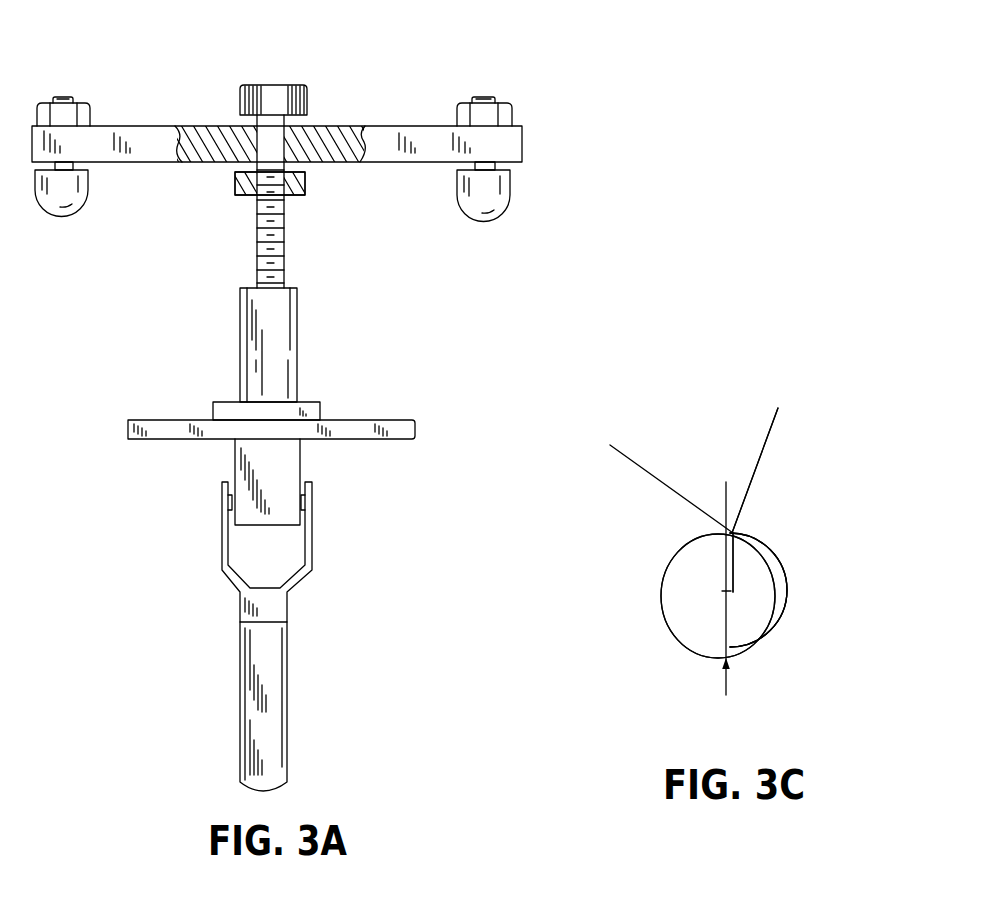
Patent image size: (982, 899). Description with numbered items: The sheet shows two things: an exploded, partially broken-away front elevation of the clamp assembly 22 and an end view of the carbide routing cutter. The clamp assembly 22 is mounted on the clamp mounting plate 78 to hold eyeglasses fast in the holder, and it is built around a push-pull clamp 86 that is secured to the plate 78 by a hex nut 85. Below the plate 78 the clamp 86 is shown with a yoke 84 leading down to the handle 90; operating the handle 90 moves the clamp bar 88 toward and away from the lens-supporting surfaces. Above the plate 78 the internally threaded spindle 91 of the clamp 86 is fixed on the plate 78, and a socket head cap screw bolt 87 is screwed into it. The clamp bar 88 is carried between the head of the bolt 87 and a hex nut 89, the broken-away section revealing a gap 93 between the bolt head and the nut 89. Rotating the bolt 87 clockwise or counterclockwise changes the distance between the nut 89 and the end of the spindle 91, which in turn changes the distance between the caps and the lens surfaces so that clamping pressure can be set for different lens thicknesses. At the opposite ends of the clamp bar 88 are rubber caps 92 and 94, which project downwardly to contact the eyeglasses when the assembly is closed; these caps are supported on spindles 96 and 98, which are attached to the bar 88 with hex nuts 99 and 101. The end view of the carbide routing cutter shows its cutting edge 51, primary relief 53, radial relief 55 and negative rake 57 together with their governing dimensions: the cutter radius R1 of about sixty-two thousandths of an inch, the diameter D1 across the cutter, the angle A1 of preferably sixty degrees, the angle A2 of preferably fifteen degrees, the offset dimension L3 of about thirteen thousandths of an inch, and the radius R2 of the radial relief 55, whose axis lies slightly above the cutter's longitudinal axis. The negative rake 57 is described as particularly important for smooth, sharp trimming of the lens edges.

In FIG. 3A, the clamp assembly 22 is at (444, 40).
In FIG. 3A, the clamp mounting plate 78 is at (415, 428).
In FIG. 3A, the yoke 84 is at (226, 582).
In FIG. 3A, the hex nut 85 is at (320, 411).
In FIG. 3A, the clamp 86 is at (293, 464).
In FIG. 3A, the bolt 87 is at (284, 84).
In FIG. 3A, the clamp bar 88 is at (522, 150).
In FIG. 3A, the hex nut 89 is at (303, 194).
In FIG. 3A, the handle 90 is at (281, 722).
In FIG. 3A, the spindle 91 is at (297, 362).
In FIG. 3A, the rubber cap 92 is at (510, 195).
In FIG. 3A, the gap 93 is at (298, 122).
In FIG. 3A, the rubber cap 94 is at (84, 203).
In FIG. 3A, the spindle 96 is at (483, 96).
In FIG. 3A, the spindle 98 is at (57, 97).
In FIG. 3A, the hex nut 99 is at (512, 113).
In FIG. 3A, the hex nut 101 is at (84, 121).
In FIG. 3C, the cutting edge 51 is at (718, 526).
In FIG. 3C, the primary relief 53 is at (762, 553).
In FIG. 3C, the radial relief 55 is at (757, 642).
In FIG. 3C, the negative rake 57 is at (722, 549).
In FIG. 3C, the angle A1 is at (633, 460).
In FIG. 3C, the angle A2 is at (703, 494).
In FIG. 3C, the dimension L3 is at (735, 575).
In FIG. 3C, the diameter D1 is at (661, 608).
In FIG. 3C, the radius R1 is at (726, 591).
In FIG. 3C, the radius R2 is at (726, 591).